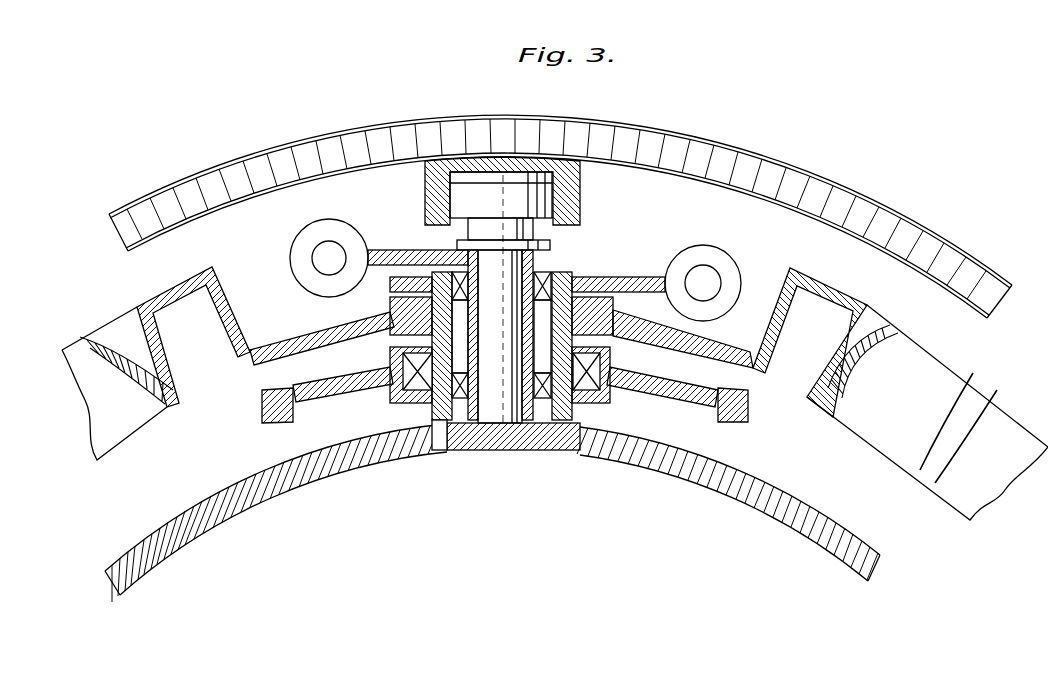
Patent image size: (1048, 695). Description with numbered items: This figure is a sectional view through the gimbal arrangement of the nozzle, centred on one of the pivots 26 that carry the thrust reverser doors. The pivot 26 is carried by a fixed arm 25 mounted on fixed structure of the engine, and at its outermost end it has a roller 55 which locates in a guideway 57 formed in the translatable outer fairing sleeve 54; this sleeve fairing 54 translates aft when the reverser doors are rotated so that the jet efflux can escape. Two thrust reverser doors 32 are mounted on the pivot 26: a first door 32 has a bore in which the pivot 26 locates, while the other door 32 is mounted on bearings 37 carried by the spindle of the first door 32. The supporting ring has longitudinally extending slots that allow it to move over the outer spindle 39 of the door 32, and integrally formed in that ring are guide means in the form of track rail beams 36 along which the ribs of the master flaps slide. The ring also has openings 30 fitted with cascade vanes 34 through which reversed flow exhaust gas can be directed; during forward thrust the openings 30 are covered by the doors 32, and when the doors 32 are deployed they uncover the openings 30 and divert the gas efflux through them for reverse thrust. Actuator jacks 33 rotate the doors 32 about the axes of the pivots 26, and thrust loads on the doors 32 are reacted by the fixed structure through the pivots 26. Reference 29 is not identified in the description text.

The fixed arm 25 is at (737, 408).
The pivot 26 is at (496, 422).
The hub flange 29 is at (580, 324).
The opening 30 is at (95, 373).
The thrust reverser door 32 is at (238, 503).
The actuator jack 33 is at (322, 258).
The cascade vane 34 is at (103, 343).
The track rail beam 36 is at (215, 357).
The bearing 37 is at (540, 278).
The outer spindle 39 is at (412, 392).
The outer fairing sleeve 54 is at (790, 185).
The roller 55 is at (462, 195).
The guideway 57 is at (580, 207).